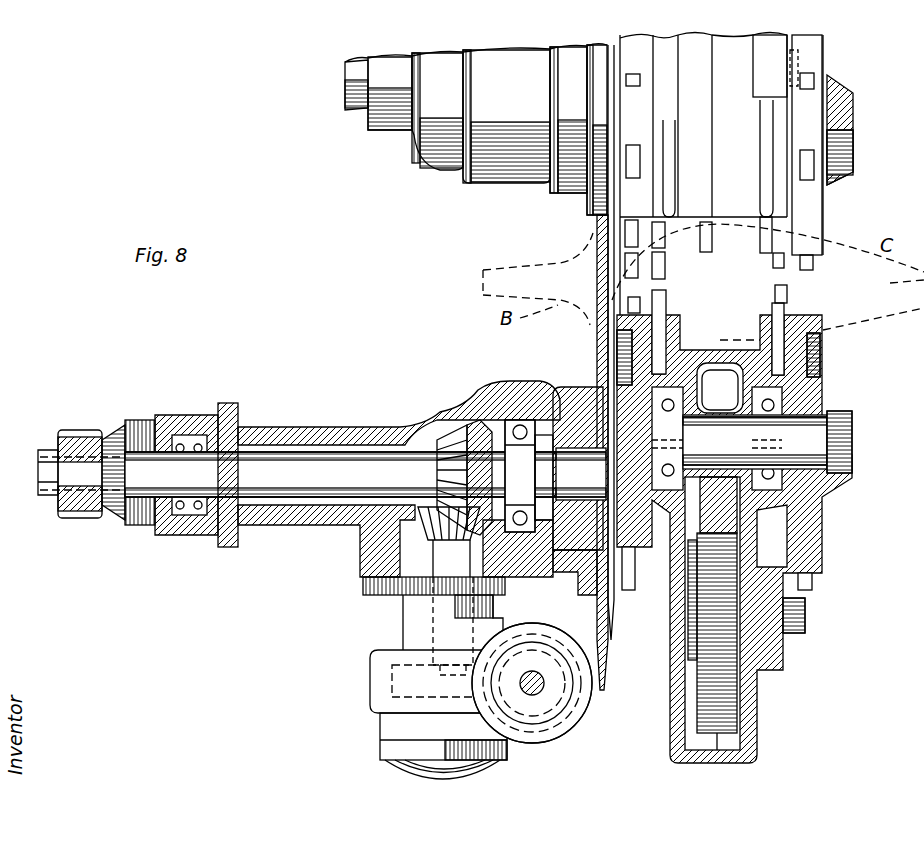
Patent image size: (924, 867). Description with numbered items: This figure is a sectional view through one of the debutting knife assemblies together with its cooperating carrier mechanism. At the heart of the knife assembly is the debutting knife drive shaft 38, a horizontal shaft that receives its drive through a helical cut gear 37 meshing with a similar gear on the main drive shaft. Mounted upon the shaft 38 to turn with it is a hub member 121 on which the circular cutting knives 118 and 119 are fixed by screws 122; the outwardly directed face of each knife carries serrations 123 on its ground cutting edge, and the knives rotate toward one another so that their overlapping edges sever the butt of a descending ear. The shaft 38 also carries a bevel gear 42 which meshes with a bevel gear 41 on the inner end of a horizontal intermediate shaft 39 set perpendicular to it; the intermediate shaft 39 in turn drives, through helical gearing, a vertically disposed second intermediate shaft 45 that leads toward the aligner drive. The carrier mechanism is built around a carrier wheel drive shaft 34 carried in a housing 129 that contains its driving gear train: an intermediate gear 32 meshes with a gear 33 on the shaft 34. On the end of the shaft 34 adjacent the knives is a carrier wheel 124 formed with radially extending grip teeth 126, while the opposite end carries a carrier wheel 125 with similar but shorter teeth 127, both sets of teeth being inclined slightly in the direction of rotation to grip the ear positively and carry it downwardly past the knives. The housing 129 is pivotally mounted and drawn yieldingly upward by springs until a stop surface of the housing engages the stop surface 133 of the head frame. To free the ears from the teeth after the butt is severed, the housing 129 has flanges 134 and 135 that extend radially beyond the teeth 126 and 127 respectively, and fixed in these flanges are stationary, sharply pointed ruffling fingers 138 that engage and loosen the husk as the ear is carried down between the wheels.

The intermediate gear 32 is at (725, 697).
The gear 33 is at (722, 378).
The carrier wheel drive shaft 34 is at (728, 449).
The helical cut gear 37 is at (90, 515).
The debutting knife drive shaft 38 is at (307, 495).
The intermediate shaft 39 is at (445, 575).
The bevel gear 41 is at (430, 525).
The bevel gear 42 is at (462, 418).
The second intermediate shaft 45 is at (540, 690).
The circular cutting knife 118 is at (607, 620).
The circular cutting knife 119 is at (606, 216).
The hub member 121 is at (570, 372).
The screw 122 is at (580, 572).
The serrations 123 is at (600, 275).
The carrier wheel 124 is at (640, 200).
The carrier wheel 125 is at (815, 203).
The grip teeth 126 is at (634, 145).
The grip teeth 127 is at (812, 155).
The housing 129 is at (750, 527).
The stop surface 133 is at (772, 44).
The flange 134 is at (714, 371).
The flange 135 is at (772, 350).
The ruffling finger 138 is at (655, 265).